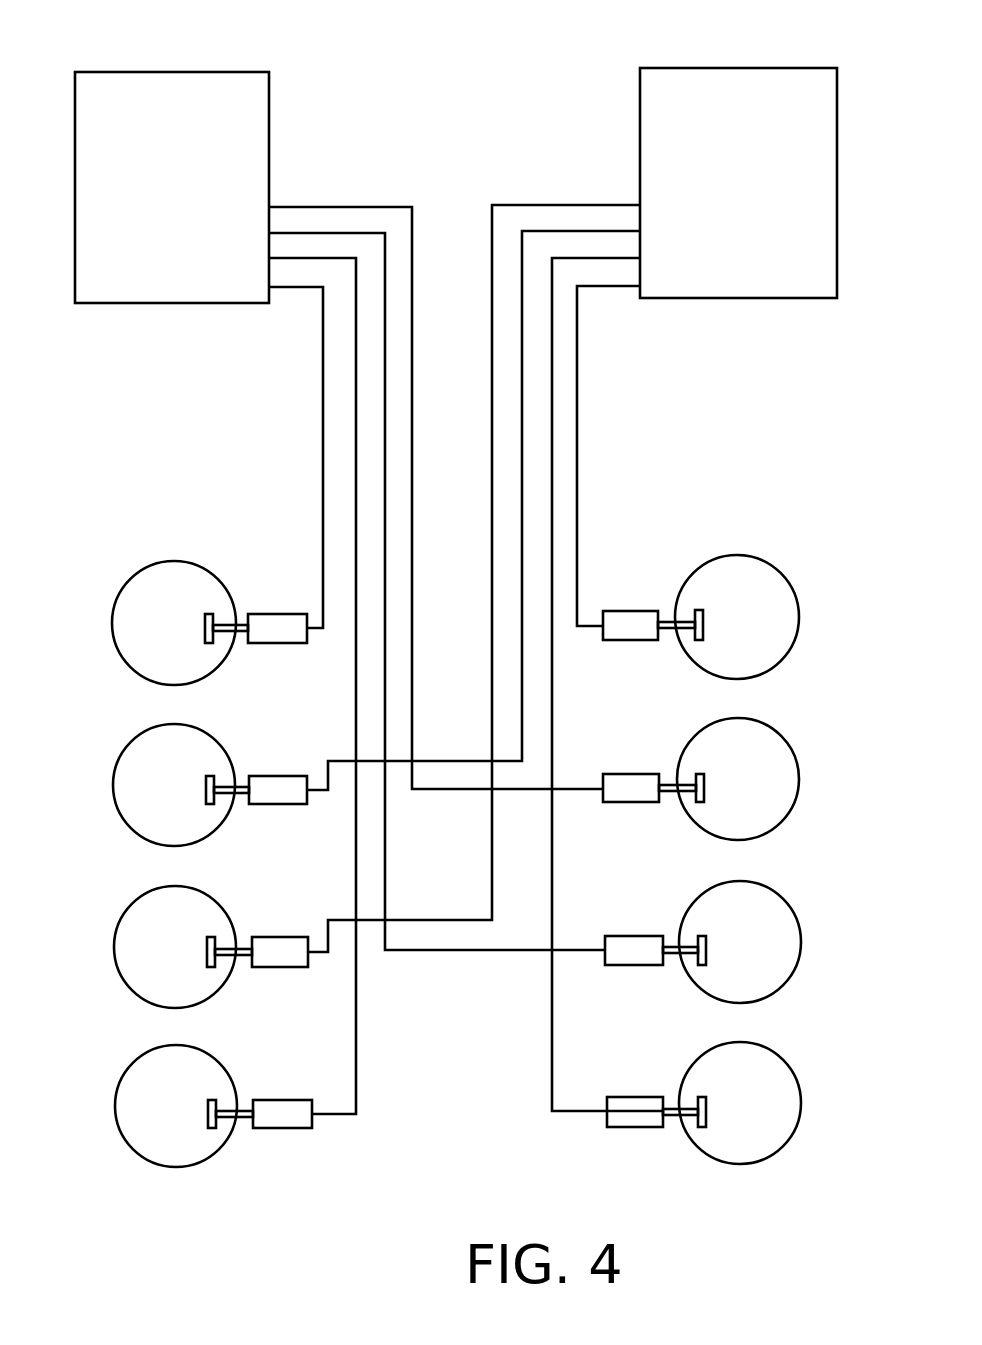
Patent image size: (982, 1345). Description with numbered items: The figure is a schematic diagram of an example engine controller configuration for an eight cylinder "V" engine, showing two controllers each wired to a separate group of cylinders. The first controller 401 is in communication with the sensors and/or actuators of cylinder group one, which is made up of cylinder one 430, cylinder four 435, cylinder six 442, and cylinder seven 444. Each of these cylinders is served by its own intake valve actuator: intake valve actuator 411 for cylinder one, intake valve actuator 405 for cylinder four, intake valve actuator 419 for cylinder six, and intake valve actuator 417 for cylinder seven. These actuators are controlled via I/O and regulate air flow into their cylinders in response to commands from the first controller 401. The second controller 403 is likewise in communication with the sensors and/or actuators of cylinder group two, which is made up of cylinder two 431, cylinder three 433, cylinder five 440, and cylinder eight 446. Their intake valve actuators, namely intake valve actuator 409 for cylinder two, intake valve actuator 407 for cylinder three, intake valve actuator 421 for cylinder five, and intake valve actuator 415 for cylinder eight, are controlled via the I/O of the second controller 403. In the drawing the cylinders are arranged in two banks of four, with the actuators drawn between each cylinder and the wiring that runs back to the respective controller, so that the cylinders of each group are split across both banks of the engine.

The first controller 401 is at (122, 72).
The second controller 403 is at (687, 67).
The intake valve actuator 405 is at (277, 645).
The intake valve actuator 407 is at (278, 806).
The intake valve actuator 409 is at (278, 969).
The intake valve actuator 411 is at (280, 1129).
The intake valve actuator 415 is at (628, 642).
The intake valve actuator 417 is at (629, 804).
The intake valve actuator 419 is at (630, 967).
The intake valve actuator 421 is at (633, 1128).
The cylinder one 430 is at (115, 1107).
The cylinder two 431 is at (114, 947).
The cylinder three 433 is at (113, 785).
The cylinder four 435 is at (112, 623).
The cylinder five 440 is at (803, 1103).
The cylinder six 442 is at (802, 942).
The cylinder seven 444 is at (800, 780).
The cylinder eight 446 is at (800, 616).